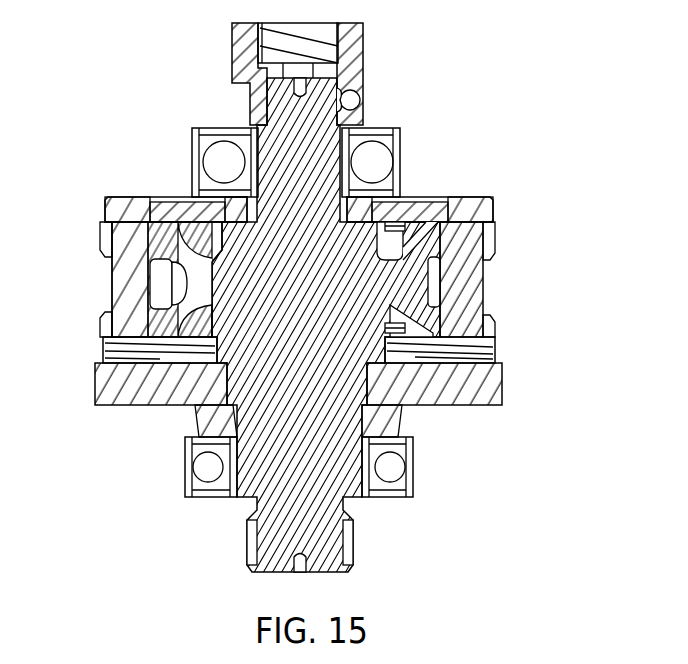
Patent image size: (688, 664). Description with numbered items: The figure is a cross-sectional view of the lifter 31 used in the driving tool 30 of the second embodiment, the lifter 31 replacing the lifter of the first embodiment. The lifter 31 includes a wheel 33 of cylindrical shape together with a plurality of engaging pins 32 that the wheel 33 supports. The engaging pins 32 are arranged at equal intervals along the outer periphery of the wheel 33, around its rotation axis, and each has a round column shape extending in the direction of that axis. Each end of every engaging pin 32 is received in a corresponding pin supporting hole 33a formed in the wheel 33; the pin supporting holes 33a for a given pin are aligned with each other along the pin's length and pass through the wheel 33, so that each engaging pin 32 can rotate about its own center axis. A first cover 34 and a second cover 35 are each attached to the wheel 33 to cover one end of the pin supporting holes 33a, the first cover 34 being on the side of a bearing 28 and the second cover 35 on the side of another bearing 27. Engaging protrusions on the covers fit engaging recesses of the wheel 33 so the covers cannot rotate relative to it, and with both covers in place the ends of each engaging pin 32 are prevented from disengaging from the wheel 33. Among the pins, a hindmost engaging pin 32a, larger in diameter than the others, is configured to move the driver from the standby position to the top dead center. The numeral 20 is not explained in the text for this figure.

The rotor hub 20 is at (527, 87).
The bearing 27 is at (395, 467).
The bearing 28 is at (215, 148).
The driving tool 30 is at (536, 35).
The lifter 31 is at (511, 152).
The engaging pin 32 is at (112, 277).
The hindmost engaging pin 32a is at (484, 290).
The wheel 33 is at (373, 257).
The pin supporting hole 33a is at (485, 266).
The first cover 34 is at (123, 207).
The second cover 35 is at (103, 350).